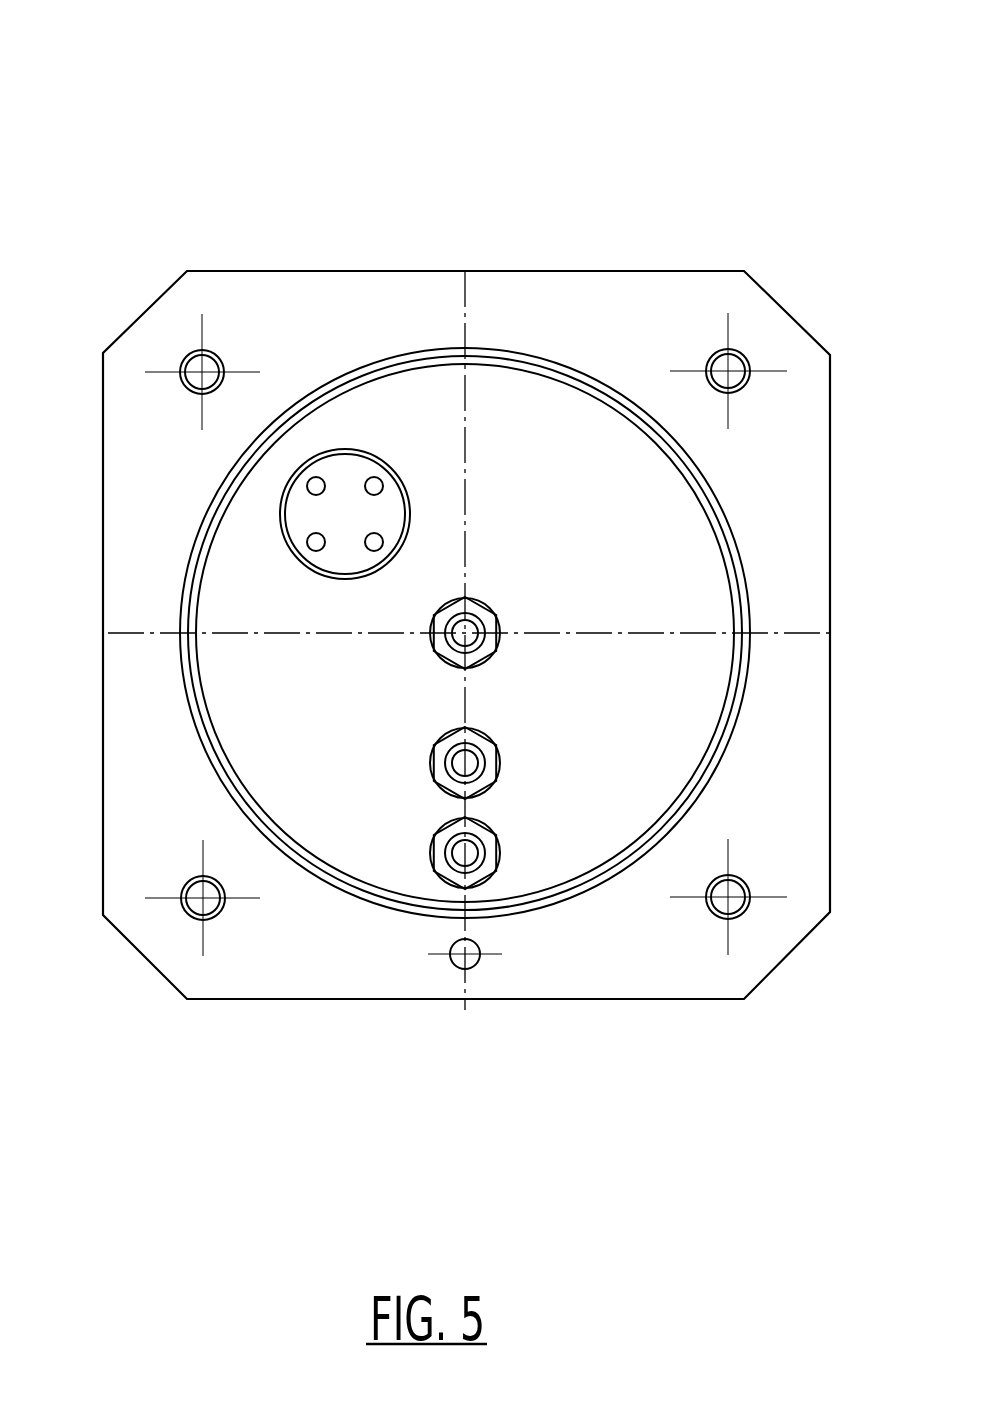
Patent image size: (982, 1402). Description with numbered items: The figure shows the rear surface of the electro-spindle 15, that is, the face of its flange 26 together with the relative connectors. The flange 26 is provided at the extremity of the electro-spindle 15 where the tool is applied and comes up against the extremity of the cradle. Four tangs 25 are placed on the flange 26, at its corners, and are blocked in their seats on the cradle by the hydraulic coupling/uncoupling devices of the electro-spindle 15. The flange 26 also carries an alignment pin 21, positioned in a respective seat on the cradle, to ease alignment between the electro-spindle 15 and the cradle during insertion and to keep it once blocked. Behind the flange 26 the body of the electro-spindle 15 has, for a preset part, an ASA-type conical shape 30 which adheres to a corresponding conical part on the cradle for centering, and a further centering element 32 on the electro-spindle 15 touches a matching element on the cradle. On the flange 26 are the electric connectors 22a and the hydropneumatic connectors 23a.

The electro-spindle 15 is at (469, 507).
The flange 26 is at (434, 502).
The tangs 25 is at (476, 614).
The conical shape 30 is at (465, 461).
The element 32 is at (465, 457).
The electric connectors 22a is at (338, 836).
The hydropneumatic connectors 23a is at (485, 846).
The alignment pin 21 is at (498, 1081).